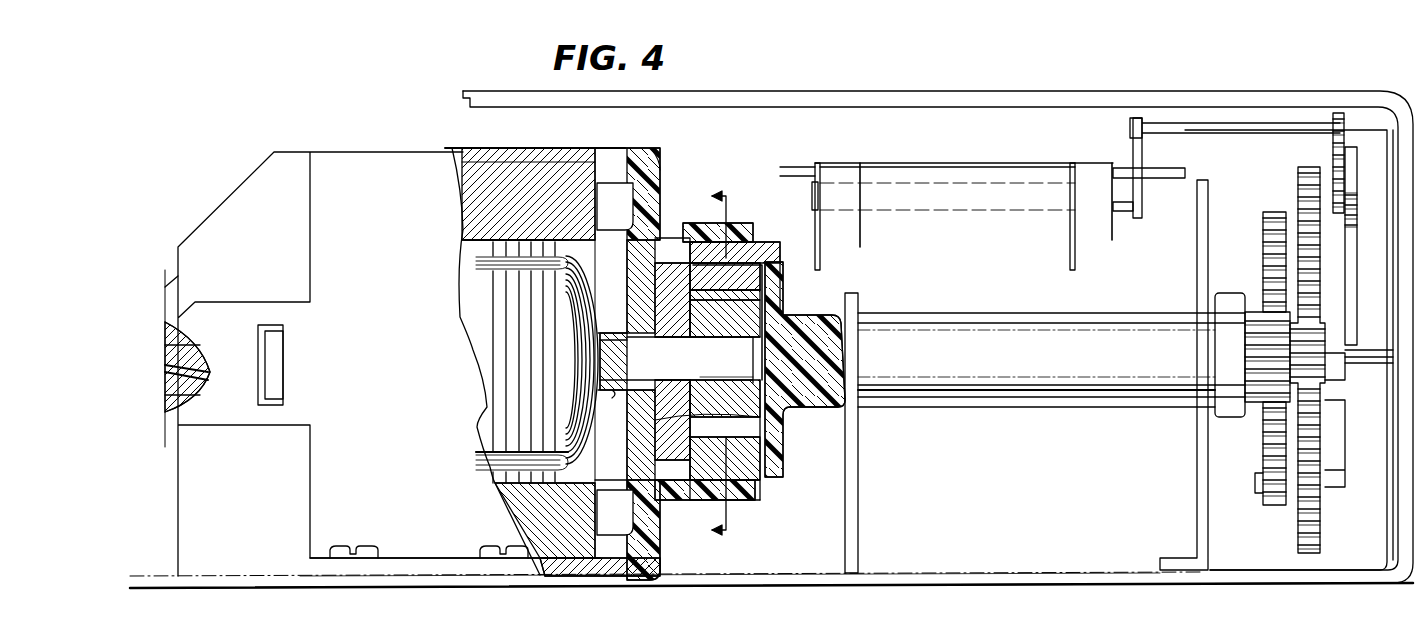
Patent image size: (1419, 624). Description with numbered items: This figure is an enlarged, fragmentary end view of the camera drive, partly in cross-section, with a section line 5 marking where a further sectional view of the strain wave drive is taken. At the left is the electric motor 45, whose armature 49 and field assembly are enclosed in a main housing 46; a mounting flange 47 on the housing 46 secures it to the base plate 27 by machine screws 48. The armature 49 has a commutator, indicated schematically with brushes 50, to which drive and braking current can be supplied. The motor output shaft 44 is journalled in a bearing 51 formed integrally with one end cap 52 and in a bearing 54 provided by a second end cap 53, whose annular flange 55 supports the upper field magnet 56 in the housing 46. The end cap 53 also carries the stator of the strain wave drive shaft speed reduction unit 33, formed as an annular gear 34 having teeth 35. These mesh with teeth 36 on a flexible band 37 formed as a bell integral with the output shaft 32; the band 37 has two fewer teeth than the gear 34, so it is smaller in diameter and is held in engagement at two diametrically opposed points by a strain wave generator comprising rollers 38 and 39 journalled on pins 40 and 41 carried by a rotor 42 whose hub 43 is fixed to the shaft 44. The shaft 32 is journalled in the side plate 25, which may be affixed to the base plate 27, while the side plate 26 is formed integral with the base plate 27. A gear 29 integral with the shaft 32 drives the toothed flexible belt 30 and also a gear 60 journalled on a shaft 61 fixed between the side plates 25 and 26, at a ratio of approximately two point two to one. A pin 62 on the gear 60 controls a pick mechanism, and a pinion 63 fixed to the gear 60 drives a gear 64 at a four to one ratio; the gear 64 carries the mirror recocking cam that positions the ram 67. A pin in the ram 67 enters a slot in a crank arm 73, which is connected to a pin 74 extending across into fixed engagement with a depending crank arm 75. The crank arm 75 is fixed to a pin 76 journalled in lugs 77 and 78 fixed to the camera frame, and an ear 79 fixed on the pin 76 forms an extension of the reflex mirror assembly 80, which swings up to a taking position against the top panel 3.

The top panel 3 is at (978, 98).
The section line 5 is at (709, 363).
The side plate 25 is at (1197, 200).
The side plate 26 is at (1387, 272).
The base plate 27 is at (1043, 575).
The gear 29 is at (1255, 405).
The toothed flexible elongated belt 30 is at (1228, 293).
The output shaft 32 is at (1070, 313).
The strain wave drive shaft speed reduction unit 33 is at (795, 450).
The annular gear 34 is at (733, 223).
The teeth 35 is at (752, 240).
The teeth 36 is at (753, 492).
The flexible band 37 is at (758, 252).
The roller 38 is at (785, 410).
The roller 39 is at (765, 266).
The pin 40 is at (660, 428).
The pin 41 is at (760, 295).
The rotor 42 is at (672, 238).
The hub 43 is at (710, 333).
The output shaft 44 is at (165, 366).
The electric motor 45 is at (606, 144).
The main housing 46 is at (396, 165).
The mounting flange 47 is at (416, 558).
The machine screws 48 is at (345, 546).
The armature 49 is at (580, 288).
The brushes 50 is at (283, 352).
The bearing 51 is at (155, 283).
The end cap 52 is at (240, 196).
The end cap 53 is at (662, 158).
The bearing 54 is at (612, 386).
The annular flange 55 is at (615, 359).
The upper field magnet 56 is at (548, 152).
The gear 60 is at (1274, 212).
The shaft 61 is at (1366, 350).
The pin 62 is at (1255, 493).
The pinion 63 is at (1334, 384).
The gear 64 is at (1320, 510).
The ram 67 is at (1362, 153).
The crank arm 73 is at (1333, 152).
The pin 74 is at (1190, 123).
The depending crank arm 75 is at (1133, 158).
The pin 76 is at (1122, 212).
The lug 77 is at (830, 163).
The lug 78 is at (1072, 163).
The ear 79 is at (978, 163).
The reflex mirror assembly 80 is at (1155, 170).